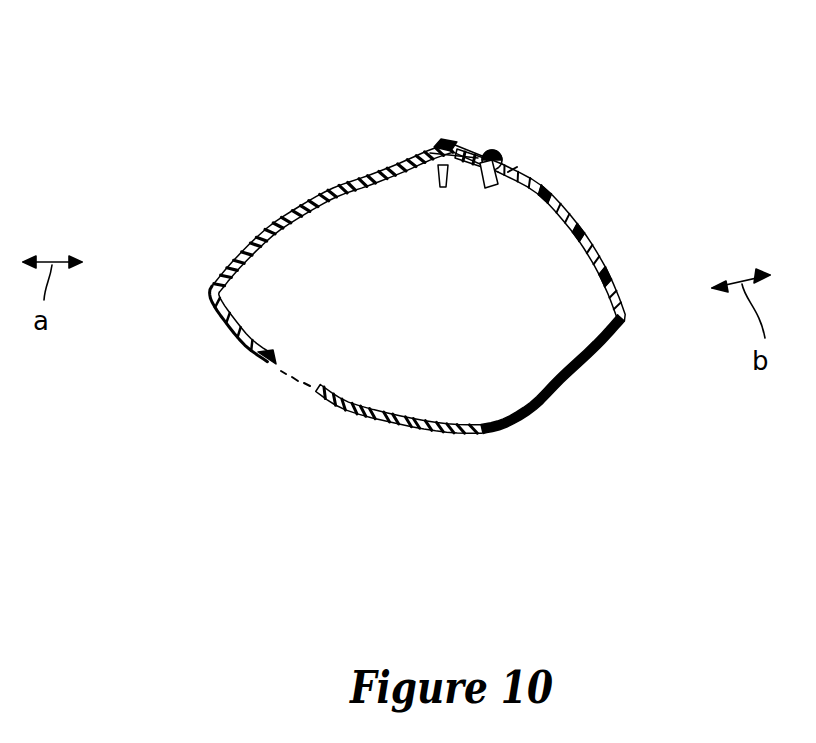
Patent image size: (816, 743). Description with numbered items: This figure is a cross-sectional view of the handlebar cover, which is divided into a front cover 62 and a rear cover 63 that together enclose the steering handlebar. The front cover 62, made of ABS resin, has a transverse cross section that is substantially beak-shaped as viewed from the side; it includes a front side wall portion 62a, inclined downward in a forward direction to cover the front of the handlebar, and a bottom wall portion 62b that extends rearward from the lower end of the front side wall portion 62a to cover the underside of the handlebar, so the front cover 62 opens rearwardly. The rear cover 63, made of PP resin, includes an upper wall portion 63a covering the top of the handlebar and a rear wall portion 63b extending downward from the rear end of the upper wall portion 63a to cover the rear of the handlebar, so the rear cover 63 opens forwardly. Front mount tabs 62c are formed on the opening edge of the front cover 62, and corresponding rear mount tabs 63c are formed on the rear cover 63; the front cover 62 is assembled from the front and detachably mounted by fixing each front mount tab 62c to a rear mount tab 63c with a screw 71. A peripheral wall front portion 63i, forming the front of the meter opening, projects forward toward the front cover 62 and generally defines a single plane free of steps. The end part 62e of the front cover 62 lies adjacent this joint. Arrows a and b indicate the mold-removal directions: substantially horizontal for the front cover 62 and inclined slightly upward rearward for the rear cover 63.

The front cover 62 is at (316, 182).
The front side wall portion 62a is at (269, 225).
The bottom wall portion 62b is at (414, 434).
The front mount tab 62c is at (463, 168).
The end part of first frame portion 62e is at (441, 139).
The rear cover 63 is at (592, 230).
The upper wall portion 63a is at (541, 182).
The rear wall portion 63b is at (585, 357).
The rear mount tab 63c is at (514, 168).
The peripheral wall front portion 63i is at (468, 145).
The screw 71 is at (494, 150).